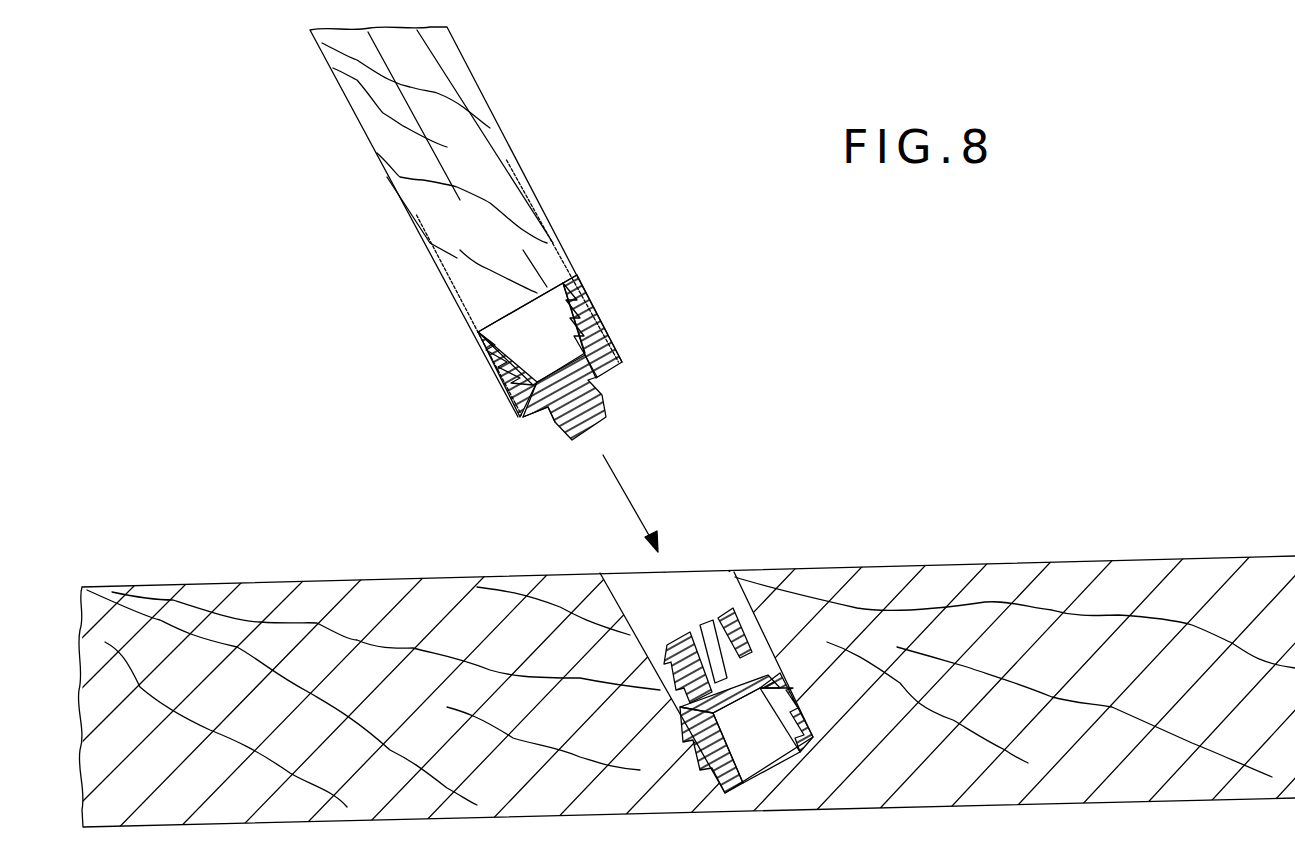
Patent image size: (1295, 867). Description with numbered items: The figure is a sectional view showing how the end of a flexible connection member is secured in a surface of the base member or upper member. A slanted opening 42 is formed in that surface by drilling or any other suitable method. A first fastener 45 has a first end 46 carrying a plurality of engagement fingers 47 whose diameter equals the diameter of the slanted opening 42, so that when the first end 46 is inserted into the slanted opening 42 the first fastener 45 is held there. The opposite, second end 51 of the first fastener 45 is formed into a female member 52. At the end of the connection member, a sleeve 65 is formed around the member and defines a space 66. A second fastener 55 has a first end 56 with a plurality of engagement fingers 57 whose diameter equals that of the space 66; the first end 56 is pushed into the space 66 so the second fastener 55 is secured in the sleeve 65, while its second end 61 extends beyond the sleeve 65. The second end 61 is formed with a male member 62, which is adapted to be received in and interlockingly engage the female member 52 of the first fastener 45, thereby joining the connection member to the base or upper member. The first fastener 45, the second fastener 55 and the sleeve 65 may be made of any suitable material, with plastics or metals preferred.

The sleeve 65 is at (540, 203).
The first end 56 is at (587, 290).
The engagement fingers 57 is at (595, 312).
The second fastener 55 is at (590, 370).
The space 66 is at (490, 357).
The male member 62 is at (607, 415).
The second end 61 is at (535, 416).
The female member 52 is at (710, 625).
The slanted opening 42 is at (705, 587).
The second end 51 is at (742, 588).
The first fastener 45 is at (817, 697).
The engagement fingers 47 is at (812, 735).
The first end 46 is at (813, 745).